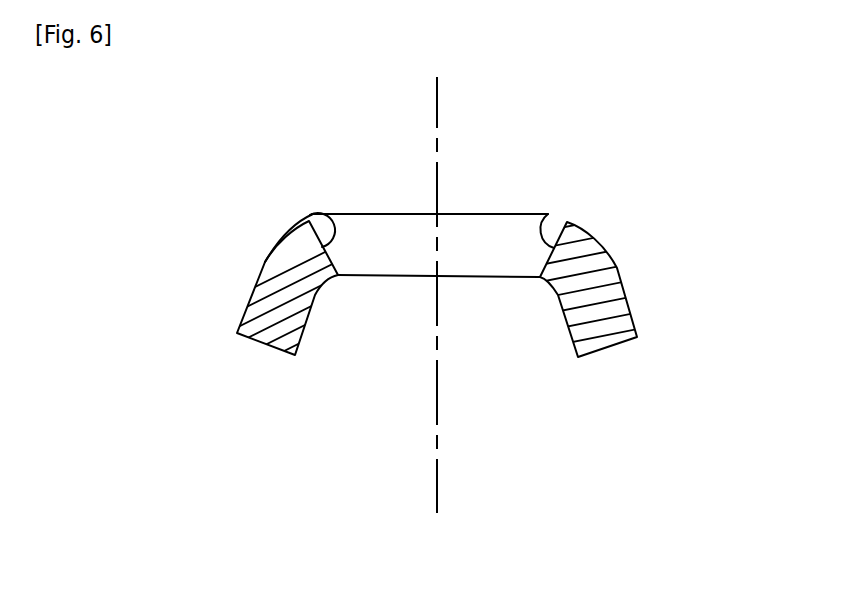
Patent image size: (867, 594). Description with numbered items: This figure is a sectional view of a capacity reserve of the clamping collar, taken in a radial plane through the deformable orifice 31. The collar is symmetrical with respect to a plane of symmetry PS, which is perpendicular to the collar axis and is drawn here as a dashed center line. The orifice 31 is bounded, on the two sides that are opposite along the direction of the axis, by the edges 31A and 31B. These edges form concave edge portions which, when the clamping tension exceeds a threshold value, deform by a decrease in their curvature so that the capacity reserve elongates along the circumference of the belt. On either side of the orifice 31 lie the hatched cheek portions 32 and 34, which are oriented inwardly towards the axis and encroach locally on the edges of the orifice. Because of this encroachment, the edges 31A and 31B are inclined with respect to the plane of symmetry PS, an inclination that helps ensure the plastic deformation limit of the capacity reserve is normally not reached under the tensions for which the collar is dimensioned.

The deformable orifice 31 is at (410, 237).
The edge of the orifice 31A is at (546, 214).
The edge of the orifice 31B is at (326, 213).
The cheek portion 32 is at (620, 285).
The cheek portion 34 is at (252, 285).
The plane of symmetry PS is at (438, 118).